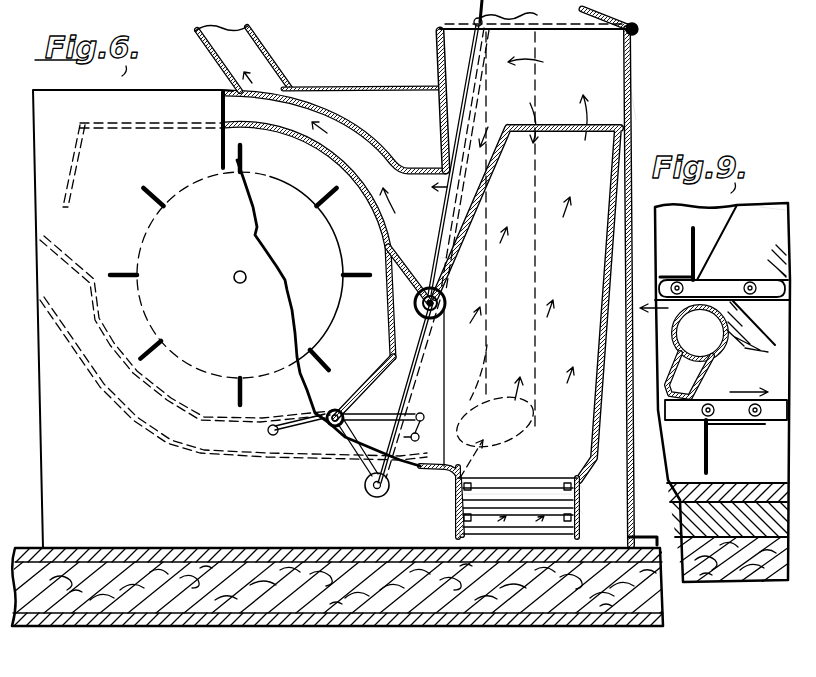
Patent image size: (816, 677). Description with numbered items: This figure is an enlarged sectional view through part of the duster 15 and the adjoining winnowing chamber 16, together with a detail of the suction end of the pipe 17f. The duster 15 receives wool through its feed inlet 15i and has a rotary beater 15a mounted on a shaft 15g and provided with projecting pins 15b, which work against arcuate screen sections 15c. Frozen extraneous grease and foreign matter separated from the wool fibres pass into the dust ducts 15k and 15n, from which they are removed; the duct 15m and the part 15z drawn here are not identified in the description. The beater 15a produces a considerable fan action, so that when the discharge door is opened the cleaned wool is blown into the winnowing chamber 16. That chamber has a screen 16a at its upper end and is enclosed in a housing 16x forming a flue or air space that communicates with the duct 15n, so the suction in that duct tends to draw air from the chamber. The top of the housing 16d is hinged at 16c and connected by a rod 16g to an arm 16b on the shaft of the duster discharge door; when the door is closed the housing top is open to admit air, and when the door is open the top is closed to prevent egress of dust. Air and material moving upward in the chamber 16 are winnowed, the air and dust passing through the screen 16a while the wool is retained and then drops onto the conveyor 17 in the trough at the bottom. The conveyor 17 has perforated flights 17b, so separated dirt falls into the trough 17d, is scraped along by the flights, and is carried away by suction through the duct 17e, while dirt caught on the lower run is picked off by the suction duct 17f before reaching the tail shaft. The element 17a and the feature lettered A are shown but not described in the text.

In FIG. 6, the duster 15 is at (52, 97).
In FIG. 6, the feed inlet 15i is at (57, 227).
In FIG. 6, the projecting pins 15b is at (153, 192).
In FIG. 6, the outlet duct 15m is at (255, 50).
In FIG. 6, the dust duct 15n is at (349, 138).
In FIG. 6, the rotary beater 15a is at (278, 313).
In FIG. 6, the arcuate screen sections 15c is at (187, 417).
In FIG. 6, the shaft 15g is at (235, 283).
In FIG. 6, the damper arm 15z is at (373, 367).
In FIG. 6, the dust duct 15k is at (108, 392).
In FIG. 6, the housing top 16d is at (443, 31).
In FIG. 6, the screen 16a is at (563, 133).
In FIG. 6, the winnowing chamber 16 is at (600, 173).
In FIG. 6, the hinge 16c is at (640, 34).
In FIG. 6, the housing 16x is at (634, 67).
In FIG. 6, the rod 16g is at (442, 267).
In FIG. 6, the arm 16b is at (386, 493).
In FIG. 6, the duct 17e is at (506, 18).
In FIG. 9, the duct 17e is at (769, 219).
In FIG. 6, the conveyor 17 is at (566, 466).
In FIG. 9, the conveyor 17 is at (770, 422).
In FIG. 6, the flights 17b is at (478, 482).
In FIG. 9, the flights 17b is at (695, 242).
In FIG. 6, the mounting plate 17a is at (582, 489).
In FIG. 9, the mounting plate 17a is at (727, 284).
In FIG. 6, the trough 17d is at (582, 513).
In FIG. 6, the air suction duct 17f is at (452, 500).
In FIG. 9, the air suction duct 17f is at (730, 371).
In FIG. 6, the base A is at (347, 595).
In FIG. 9, the base A is at (737, 580).